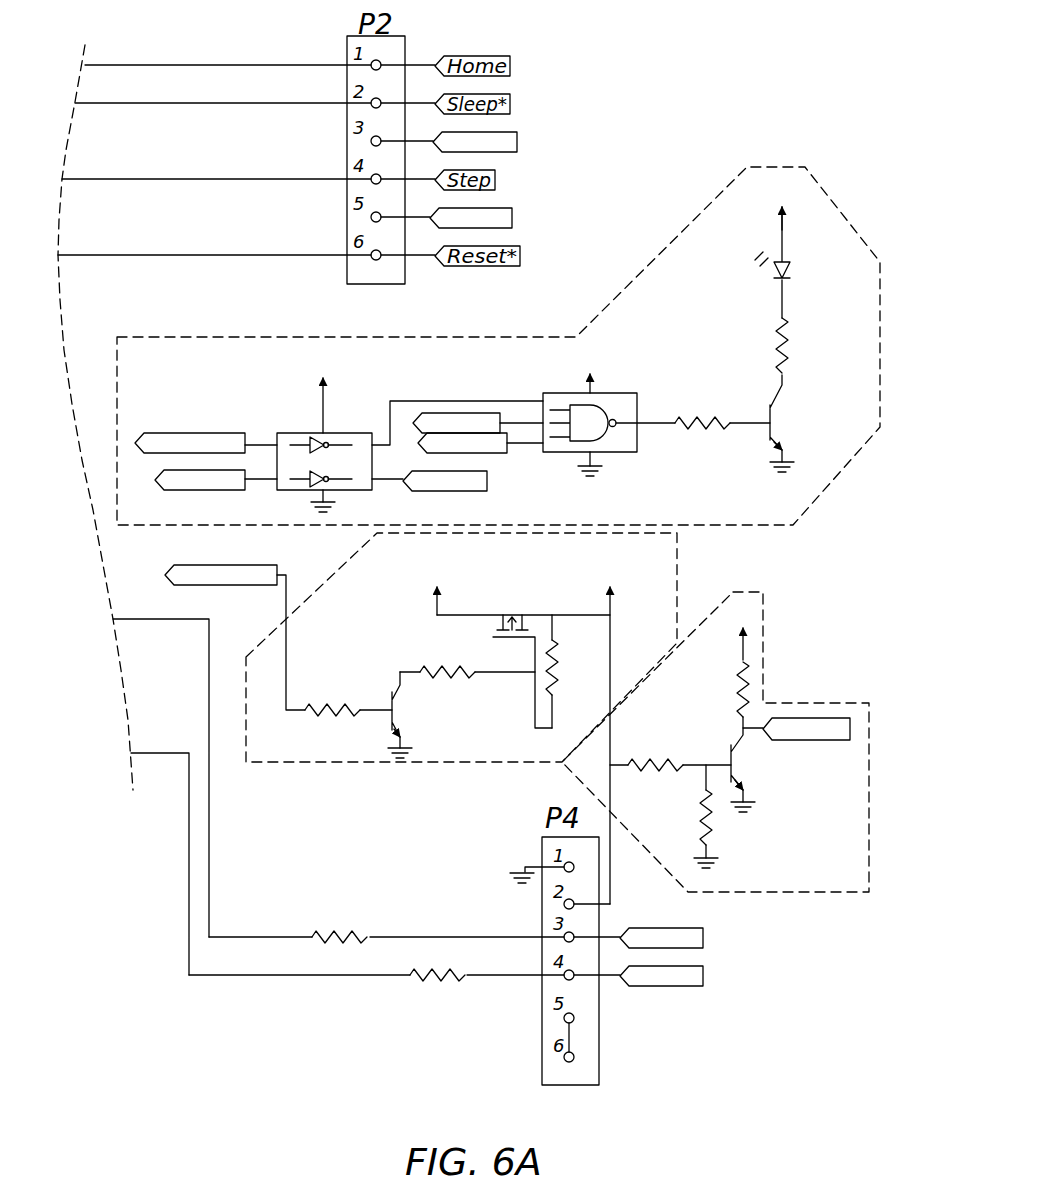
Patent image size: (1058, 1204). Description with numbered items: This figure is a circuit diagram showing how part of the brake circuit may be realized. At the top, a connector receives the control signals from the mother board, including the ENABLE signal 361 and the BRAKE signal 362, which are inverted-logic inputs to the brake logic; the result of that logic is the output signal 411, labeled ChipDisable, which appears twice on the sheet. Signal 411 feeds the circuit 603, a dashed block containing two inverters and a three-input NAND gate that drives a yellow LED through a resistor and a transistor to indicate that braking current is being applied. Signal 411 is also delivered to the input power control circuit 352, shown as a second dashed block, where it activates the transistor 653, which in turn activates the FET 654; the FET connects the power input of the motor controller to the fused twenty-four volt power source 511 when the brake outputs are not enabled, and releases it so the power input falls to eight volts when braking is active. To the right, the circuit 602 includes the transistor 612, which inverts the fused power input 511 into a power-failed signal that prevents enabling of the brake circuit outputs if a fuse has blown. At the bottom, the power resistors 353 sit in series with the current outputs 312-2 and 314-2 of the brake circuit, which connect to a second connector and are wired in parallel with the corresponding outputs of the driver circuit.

The ENABLE signal 361 is at (517, 143).
The BRAKE signal 362 is at (512, 218).
The LED activating circuit 603 is at (253, 337).
The NAND gate output signal 411 is at (222, 433).
The transistor 653 is at (392, 688).
The FET 654 is at (488, 630).
The +24V fused power source 511 is at (621, 588).
The transistor 612 is at (726, 748).
The input power control circuit 352 is at (340, 765).
The +24V fail detection circuit 602 is at (565, 775).
The current output 312-2 is at (703, 938).
The current output 314-2 is at (703, 977).
The power resistors 353 is at (409, 1011).